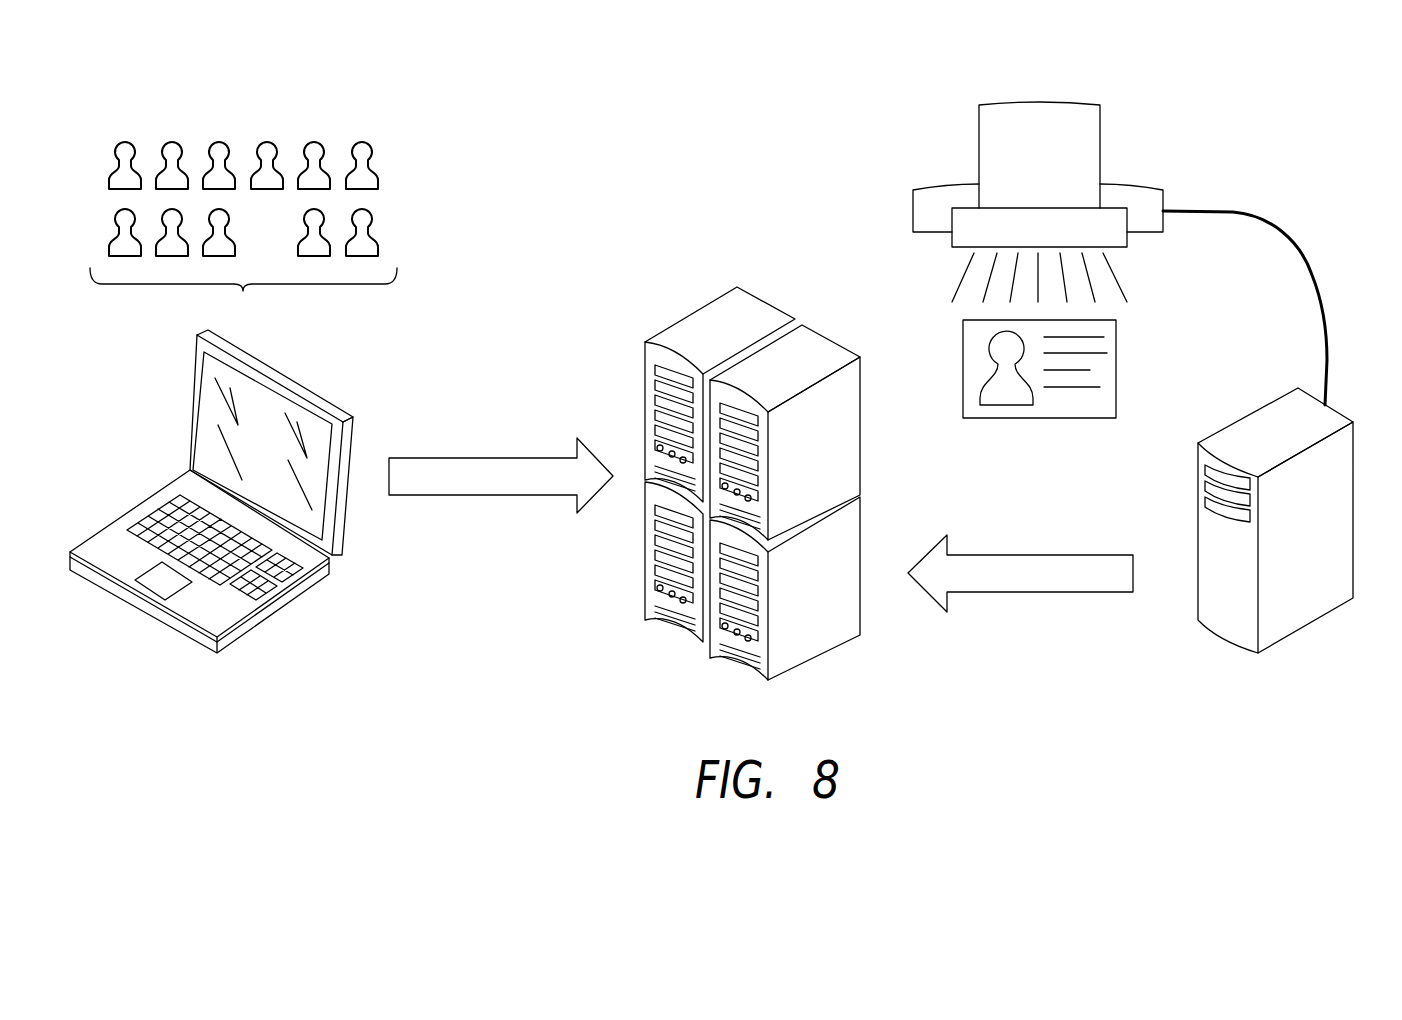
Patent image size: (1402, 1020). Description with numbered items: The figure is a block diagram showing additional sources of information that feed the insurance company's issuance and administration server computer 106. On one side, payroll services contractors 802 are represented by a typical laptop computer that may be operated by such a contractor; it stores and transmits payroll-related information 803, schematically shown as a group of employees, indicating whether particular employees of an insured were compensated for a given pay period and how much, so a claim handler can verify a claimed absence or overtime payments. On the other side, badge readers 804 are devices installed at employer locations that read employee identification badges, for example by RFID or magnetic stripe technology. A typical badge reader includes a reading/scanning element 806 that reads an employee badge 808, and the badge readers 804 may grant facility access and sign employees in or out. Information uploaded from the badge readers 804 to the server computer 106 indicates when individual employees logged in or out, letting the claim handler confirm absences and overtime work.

The issuance and administration server computer 106 is at (692, 310).
The payroll services contractors 802 is at (145, 500).
The payroll-related information 803 is at (404, 171).
The badge readers 804 is at (1198, 482).
The reading/scanning element 806 is at (1100, 128).
The employee badge 808 is at (1116, 370).